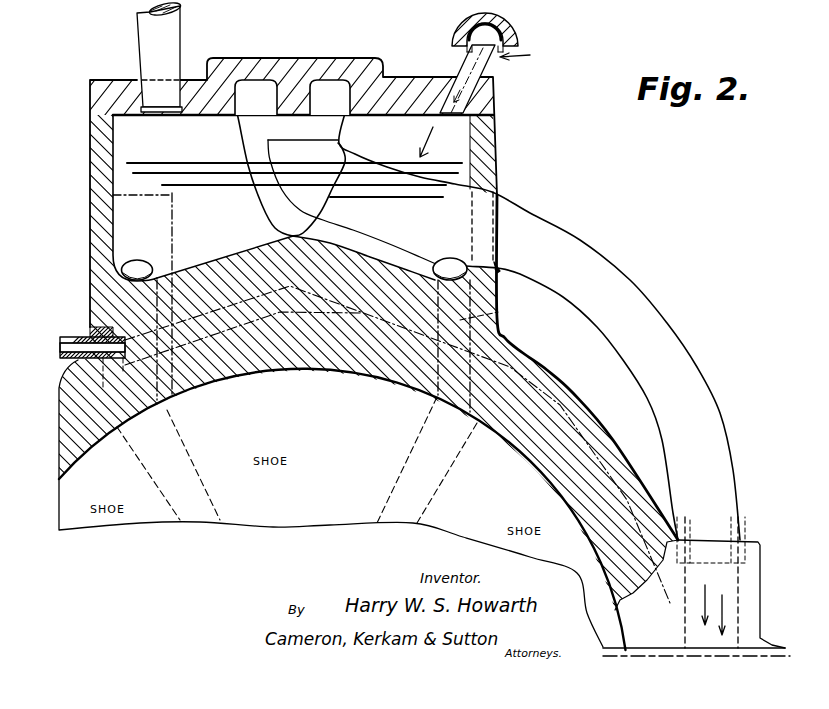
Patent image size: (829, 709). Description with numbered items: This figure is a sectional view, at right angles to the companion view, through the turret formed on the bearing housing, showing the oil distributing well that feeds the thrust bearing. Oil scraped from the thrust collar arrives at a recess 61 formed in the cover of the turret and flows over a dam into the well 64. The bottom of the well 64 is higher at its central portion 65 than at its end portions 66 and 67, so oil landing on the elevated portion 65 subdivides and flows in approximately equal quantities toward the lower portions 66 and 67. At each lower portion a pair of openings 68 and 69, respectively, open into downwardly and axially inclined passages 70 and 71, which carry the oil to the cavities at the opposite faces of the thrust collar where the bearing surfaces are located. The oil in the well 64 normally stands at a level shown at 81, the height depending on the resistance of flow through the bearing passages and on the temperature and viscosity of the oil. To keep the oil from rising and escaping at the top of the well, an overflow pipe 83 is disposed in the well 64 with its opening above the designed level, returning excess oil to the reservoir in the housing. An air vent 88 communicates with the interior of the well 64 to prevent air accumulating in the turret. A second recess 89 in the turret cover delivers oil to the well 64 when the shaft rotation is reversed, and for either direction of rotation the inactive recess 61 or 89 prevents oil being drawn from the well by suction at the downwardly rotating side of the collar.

The recess 61 is at (257, 90).
The recess 89 is at (330, 88).
The air vent 88 is at (483, 68).
The well 64 is at (460, 140).
The overflow pipe 83 is at (328, 152).
The oil level 81 is at (192, 165).
The openings 68 is at (137, 268).
The end portion of well 66 is at (161, 276).
The elevated central portion of well 65 is at (292, 237).
The end portion of well 67 is at (433, 278).
The openings 69 is at (460, 268).
The inclined passage 71 is at (498, 312).
The inclined passage 70 is at (92, 305).